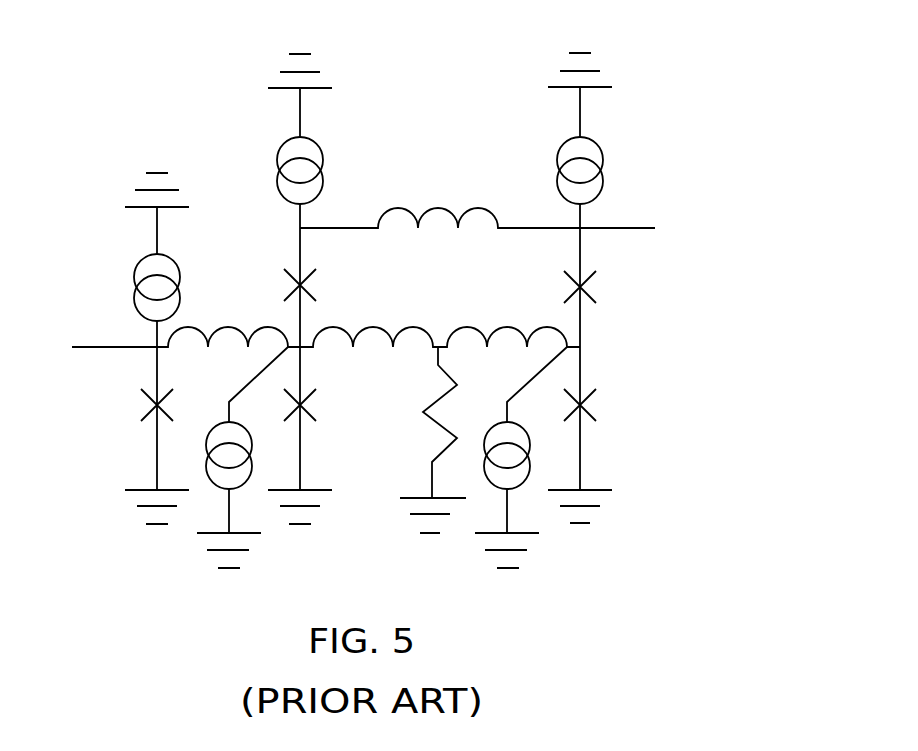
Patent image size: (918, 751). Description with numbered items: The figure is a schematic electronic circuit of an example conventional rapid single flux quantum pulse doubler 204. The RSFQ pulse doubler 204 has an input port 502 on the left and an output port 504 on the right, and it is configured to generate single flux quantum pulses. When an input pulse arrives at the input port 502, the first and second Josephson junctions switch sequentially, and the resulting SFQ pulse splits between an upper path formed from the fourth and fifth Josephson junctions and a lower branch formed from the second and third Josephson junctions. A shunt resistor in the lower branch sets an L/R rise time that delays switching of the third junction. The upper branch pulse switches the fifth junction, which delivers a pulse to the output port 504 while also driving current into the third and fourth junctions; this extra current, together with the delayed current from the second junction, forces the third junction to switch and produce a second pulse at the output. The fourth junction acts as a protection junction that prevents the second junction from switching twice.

The rapid single flux quantum (RSFQ) pulse doubler 204 is at (675, 62).
The input port 502 is at (65, 352).
The output port 504 is at (655, 226).